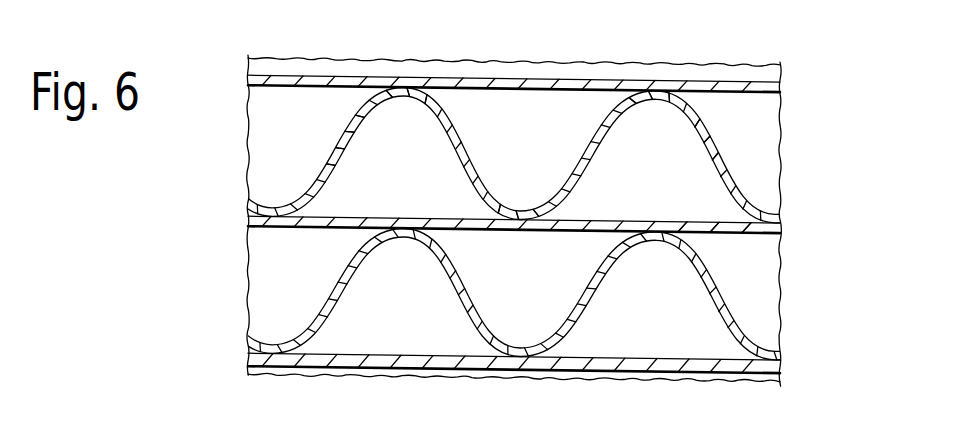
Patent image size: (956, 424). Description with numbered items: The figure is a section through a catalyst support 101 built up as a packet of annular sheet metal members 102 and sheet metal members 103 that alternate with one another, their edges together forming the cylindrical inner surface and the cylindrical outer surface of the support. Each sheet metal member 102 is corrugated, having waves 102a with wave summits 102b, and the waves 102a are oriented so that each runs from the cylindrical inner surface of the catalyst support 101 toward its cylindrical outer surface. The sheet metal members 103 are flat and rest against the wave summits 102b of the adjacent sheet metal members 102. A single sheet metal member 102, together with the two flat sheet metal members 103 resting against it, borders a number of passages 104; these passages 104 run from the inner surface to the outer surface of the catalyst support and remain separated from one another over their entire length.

The catalyst support 101 is at (247, 55).
The sheet metal member 102 is at (335, 165).
The wave 102a is at (358, 119).
The wave summit 102b is at (653, 88).
The sheet metal member 103 is at (315, 75).
The passage 104 is at (738, 307).